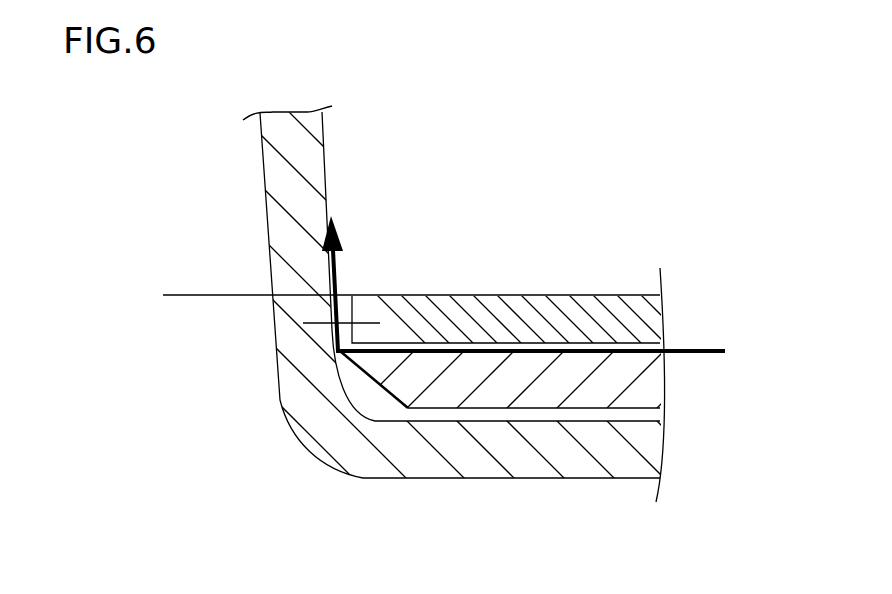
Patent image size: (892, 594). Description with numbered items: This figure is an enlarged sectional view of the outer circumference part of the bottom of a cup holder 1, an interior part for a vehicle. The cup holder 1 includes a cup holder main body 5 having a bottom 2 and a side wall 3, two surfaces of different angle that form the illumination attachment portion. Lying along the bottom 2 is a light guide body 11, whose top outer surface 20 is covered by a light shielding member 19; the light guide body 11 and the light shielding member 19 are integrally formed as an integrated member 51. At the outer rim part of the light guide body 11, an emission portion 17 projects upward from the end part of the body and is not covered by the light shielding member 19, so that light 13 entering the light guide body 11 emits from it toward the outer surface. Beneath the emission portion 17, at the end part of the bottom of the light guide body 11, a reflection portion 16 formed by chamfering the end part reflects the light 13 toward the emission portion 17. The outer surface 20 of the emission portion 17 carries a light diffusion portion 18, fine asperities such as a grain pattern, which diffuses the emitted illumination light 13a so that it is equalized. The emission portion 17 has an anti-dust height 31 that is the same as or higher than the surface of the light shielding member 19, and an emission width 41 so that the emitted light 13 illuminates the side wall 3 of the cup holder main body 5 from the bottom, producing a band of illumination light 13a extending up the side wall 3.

The cup holder 1 is at (188, 388).
The bottom 2 is at (352, 478).
The side wall 3 is at (280, 396).
The cup holder main body 5 is at (205, 437).
The light guide body 11 is at (553, 392).
The light 13 is at (607, 354).
The illumination light 13a is at (335, 318).
The reflection portion 16 is at (387, 388).
The emission portion 17 is at (367, 229).
The light diffusion portion 18 is at (344, 295).
The light shielding member 19 is at (631, 310).
The outer surface 20 is at (349, 280).
The anti-dust height 31 is at (200, 294).
The emission width 41 is at (336, 338).
The integrated member 51 is at (660, 187).